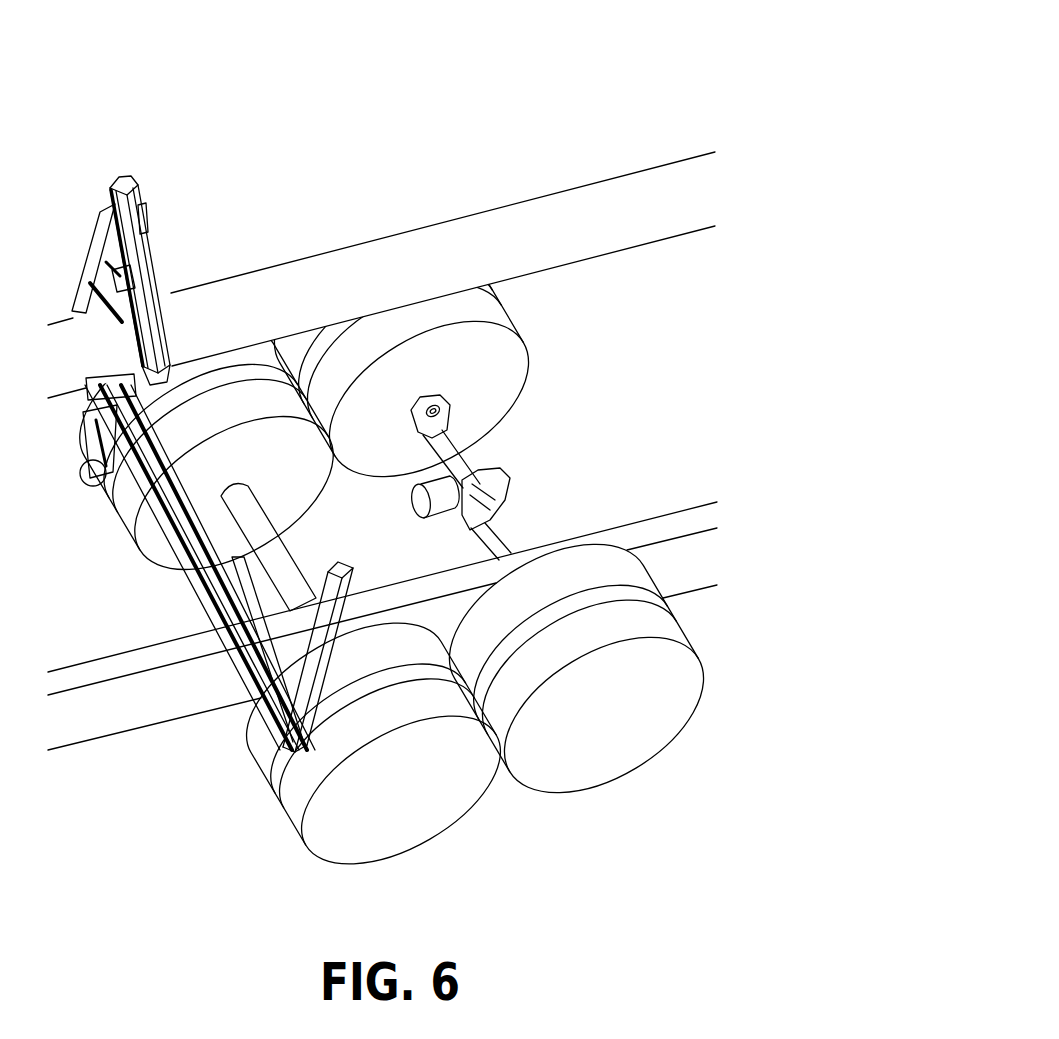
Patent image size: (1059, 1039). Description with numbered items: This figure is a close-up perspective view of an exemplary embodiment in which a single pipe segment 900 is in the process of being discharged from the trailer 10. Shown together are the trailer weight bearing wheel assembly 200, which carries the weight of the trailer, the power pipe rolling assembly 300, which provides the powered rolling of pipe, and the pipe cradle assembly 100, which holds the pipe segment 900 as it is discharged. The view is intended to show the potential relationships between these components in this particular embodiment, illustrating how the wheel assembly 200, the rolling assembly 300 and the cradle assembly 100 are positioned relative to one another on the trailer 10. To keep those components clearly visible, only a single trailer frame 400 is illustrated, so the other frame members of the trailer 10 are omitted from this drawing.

The trailer 10 is at (578, 937).
The pipe cradle assembly 100 is at (89, 128).
The trailer weight bearing wheel assembly 200 is at (268, 863).
The power pipe rolling assembly 300 is at (620, 833).
The trailer frame 400 is at (742, 494).
The pipe segment 900 is at (537, 223).